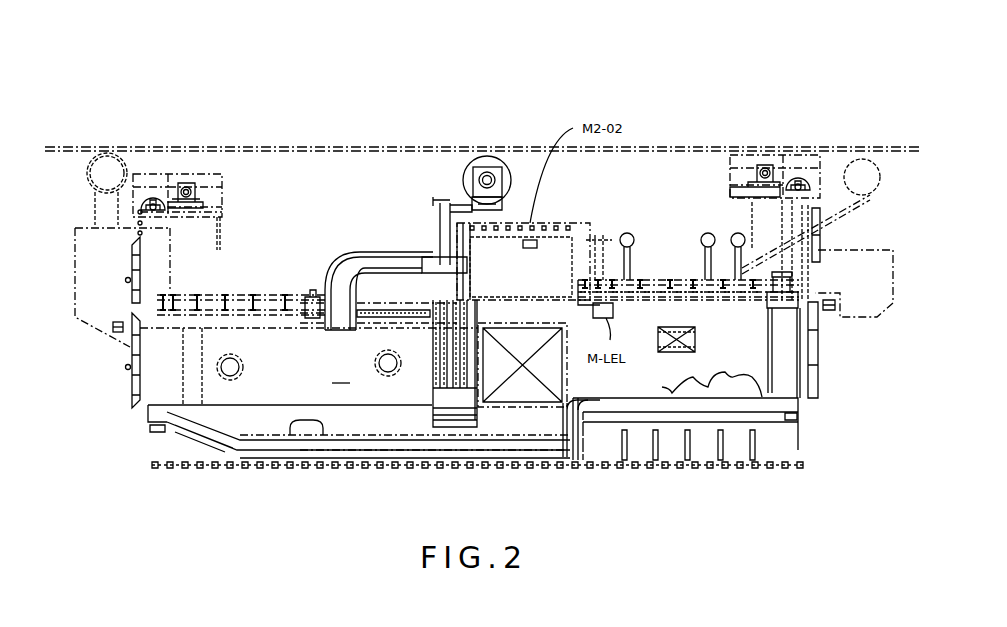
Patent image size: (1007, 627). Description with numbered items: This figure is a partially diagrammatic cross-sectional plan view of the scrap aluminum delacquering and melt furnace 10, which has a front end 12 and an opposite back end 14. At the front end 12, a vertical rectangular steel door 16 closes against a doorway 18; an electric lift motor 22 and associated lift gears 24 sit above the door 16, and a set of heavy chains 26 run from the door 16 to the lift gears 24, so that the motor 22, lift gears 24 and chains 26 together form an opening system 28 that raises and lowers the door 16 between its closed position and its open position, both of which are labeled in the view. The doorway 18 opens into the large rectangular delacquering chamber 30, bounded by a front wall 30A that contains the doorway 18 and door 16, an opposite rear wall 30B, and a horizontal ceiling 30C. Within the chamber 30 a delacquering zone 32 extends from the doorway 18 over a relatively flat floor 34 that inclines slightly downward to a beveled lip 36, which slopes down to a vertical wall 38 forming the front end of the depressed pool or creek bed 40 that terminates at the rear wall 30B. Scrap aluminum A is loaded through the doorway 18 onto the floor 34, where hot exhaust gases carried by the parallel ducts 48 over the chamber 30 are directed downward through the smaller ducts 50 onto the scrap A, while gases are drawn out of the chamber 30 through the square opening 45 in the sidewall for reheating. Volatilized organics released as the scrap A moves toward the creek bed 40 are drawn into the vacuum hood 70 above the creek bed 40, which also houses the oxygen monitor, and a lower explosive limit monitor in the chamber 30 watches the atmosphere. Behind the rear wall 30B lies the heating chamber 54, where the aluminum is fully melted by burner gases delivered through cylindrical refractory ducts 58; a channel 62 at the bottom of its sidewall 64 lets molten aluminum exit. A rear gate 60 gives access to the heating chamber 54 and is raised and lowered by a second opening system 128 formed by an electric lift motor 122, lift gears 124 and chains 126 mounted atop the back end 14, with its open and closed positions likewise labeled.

The scrap aluminum delacquering and melt furnace 10 is at (540, 107).
The front end 12 is at (715, 108).
The back end 14 is at (208, 125).
The door 16 is at (820, 262).
The doorway 18 is at (803, 403).
The electric lift motor 22 is at (762, 165).
The lift gears 24 is at (802, 167).
The chains 26 is at (815, 207).
The opening system 28 is at (810, 120).
The delacquering chamber 30 is at (640, 325).
The front wall 30A is at (787, 400).
The rear wall 30B is at (482, 417).
The ceiling 30C is at (690, 280).
The delacquering zone 32 is at (667, 375).
The floor 34 is at (658, 398).
The beveled lip 36 is at (573, 410).
The vertical wall 38 is at (562, 423).
The creek bed 40 is at (522, 420).
The square opening 45 is at (675, 327).
The cylindrical steel ducts 48 is at (623, 233).
The cylindrical steel ducts 50 is at (605, 247).
The heating chamber 54 is at (287, 390).
The refractory ducts 58 is at (228, 357).
The rear gate 60 is at (132, 268).
The channel 62 is at (307, 432).
The sidewall 64 is at (341, 374).
The vacuum hood 70 is at (538, 257).
The electric lift motor 122 is at (192, 183).
The lift gears 124 is at (152, 190).
The chains 126 is at (135, 217).
The opening system 128 is at (158, 167).
The scrap aluminum A is at (730, 370).